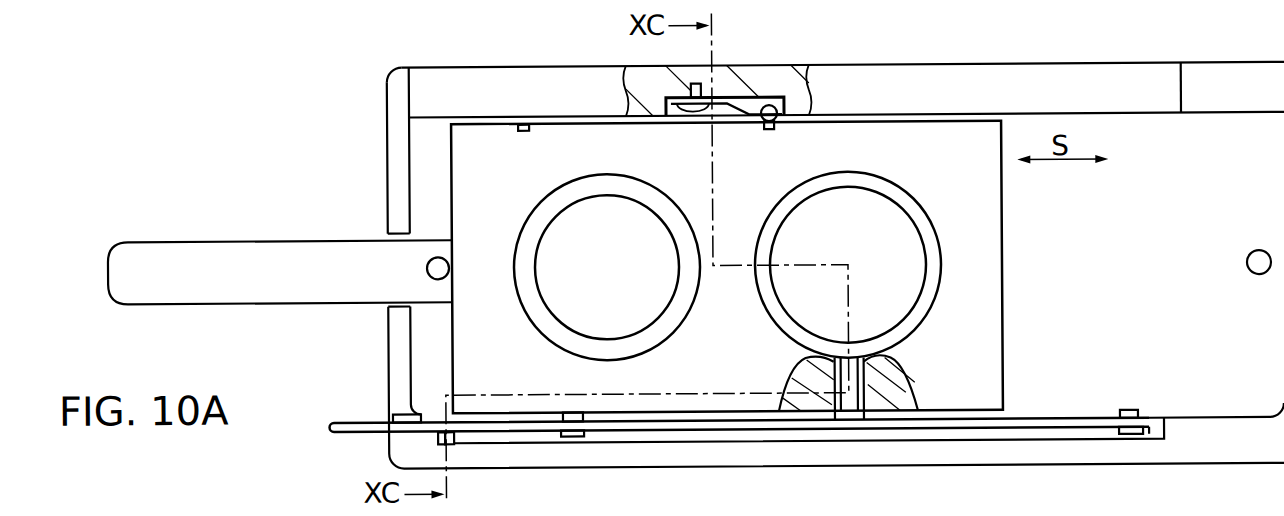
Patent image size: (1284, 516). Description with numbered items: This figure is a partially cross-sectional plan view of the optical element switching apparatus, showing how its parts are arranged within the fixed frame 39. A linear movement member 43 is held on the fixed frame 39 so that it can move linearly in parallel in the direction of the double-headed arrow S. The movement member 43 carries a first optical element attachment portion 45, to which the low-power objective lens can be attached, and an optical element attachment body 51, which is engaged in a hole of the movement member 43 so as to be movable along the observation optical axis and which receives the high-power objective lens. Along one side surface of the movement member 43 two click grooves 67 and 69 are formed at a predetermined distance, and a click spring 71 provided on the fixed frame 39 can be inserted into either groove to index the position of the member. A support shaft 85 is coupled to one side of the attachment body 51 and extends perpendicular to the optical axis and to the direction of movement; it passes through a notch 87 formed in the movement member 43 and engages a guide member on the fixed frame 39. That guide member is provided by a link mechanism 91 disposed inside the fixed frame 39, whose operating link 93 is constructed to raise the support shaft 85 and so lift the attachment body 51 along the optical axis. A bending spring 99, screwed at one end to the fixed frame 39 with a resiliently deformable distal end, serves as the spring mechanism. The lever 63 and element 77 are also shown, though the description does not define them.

The fixed frame 39 is at (387, 328).
The linear movement member 43 is at (1003, 251).
The first optical element attachment portion 45 is at (542, 203).
The optical element attachment body 51 is at (916, 203).
The lever 63 is at (248, 237).
The click groove 67 is at (530, 129).
The click groove 69 is at (777, 129).
The click spring 71 is at (732, 118).
The base plate 77 is at (1216, 459).
The support shaft 85 is at (848, 430).
The notch 87 is at (880, 377).
The link mechanism 91 is at (1079, 390).
The operating link 93 is at (340, 419).
The bending spring 99 is at (455, 442).